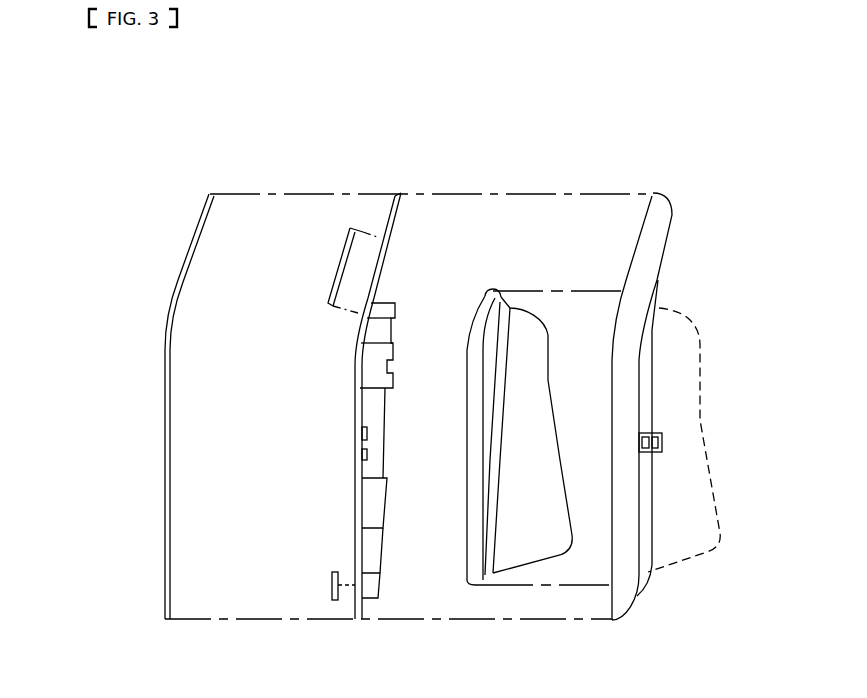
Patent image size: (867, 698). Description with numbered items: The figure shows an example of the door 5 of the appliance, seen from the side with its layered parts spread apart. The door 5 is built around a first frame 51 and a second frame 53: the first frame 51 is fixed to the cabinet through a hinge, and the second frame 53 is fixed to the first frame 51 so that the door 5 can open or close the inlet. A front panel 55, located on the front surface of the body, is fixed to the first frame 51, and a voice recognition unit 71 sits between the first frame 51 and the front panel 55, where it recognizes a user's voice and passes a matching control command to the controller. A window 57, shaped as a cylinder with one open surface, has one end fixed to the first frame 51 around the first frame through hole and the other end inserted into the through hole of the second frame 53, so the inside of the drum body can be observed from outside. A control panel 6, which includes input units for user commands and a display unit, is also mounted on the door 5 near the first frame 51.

The door 5 is at (152, 104).
The front panel 55 is at (199, 212).
The control panel 6 is at (343, 257).
The first frame 51 is at (398, 198).
The voice recognition unit 71 is at (338, 596).
The window 57 is at (490, 290).
The second frame 53 is at (658, 211).